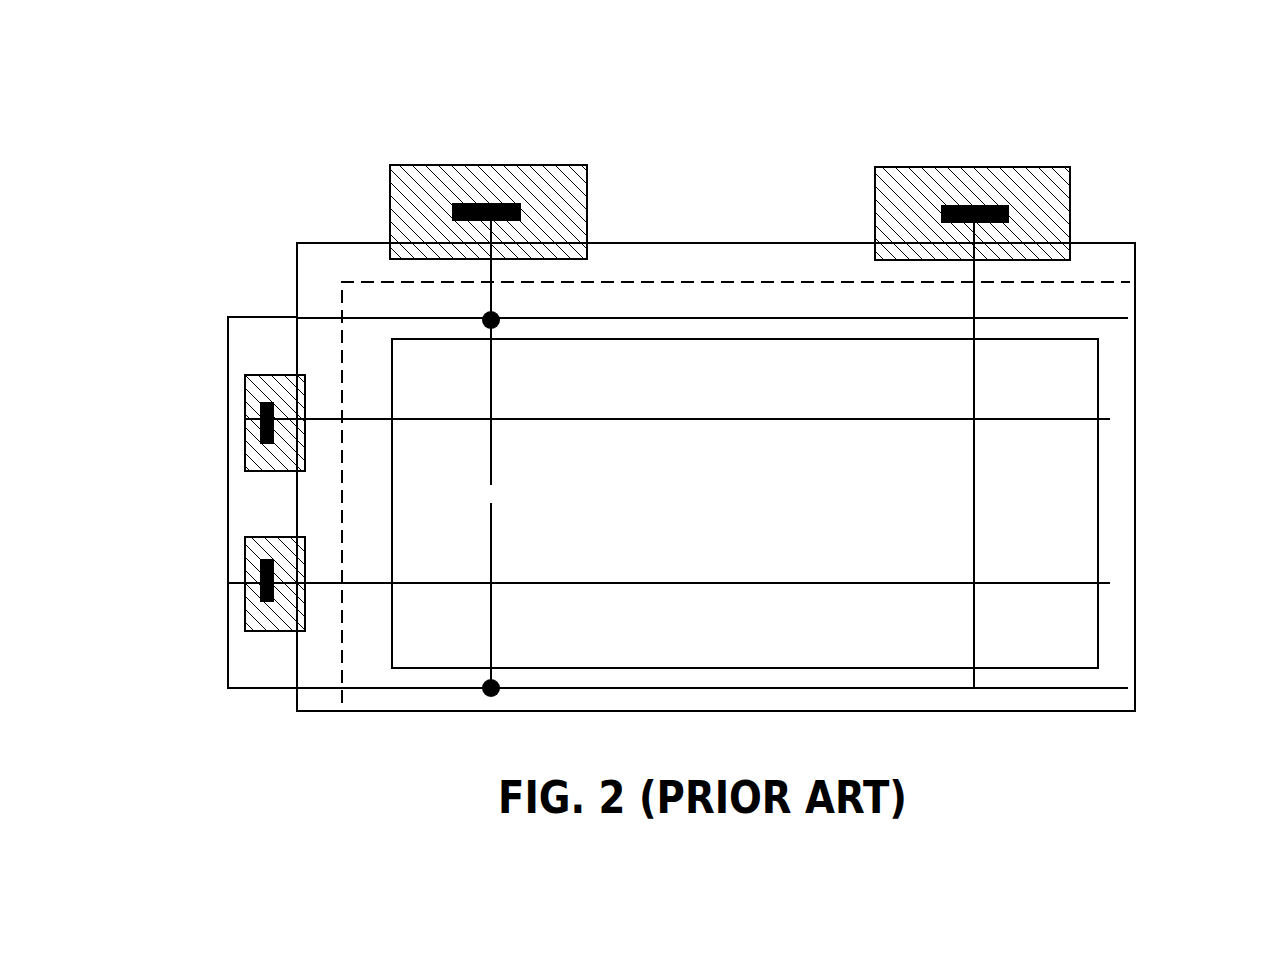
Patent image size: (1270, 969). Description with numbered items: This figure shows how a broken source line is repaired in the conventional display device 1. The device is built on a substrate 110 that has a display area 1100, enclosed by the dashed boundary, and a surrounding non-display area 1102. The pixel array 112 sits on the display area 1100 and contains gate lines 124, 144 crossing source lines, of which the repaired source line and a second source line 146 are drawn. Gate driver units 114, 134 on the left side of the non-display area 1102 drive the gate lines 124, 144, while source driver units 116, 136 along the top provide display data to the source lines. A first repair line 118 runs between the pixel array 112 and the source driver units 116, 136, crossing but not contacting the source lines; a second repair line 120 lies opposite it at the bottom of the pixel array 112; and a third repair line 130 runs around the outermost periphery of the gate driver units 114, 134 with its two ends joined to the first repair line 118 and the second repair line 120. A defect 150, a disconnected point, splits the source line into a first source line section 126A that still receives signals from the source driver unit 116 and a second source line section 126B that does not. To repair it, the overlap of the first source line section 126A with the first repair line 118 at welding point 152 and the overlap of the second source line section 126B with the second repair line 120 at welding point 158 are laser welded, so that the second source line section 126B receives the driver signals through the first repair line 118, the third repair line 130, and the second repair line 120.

The display device 1 is at (1264, 71).
The substrate 110 is at (1113, 243).
The pixel array 112 is at (1098, 382).
The gate driver unit 114 is at (258, 424).
The source driver unit 116 is at (482, 178).
The first repair line 118 is at (645, 320).
The second repair line 120 is at (820, 688).
The gate line 124 is at (727, 420).
The first source line section 126A is at (491, 453).
The second source line section 126B is at (491, 559).
The third repair line 130 is at (228, 333).
The gate driver unit 134 is at (230, 583).
The source driver unit 136 is at (975, 195).
The gate line 144 is at (727, 583).
The source line 146 is at (975, 513).
The defect 150 is at (500, 495).
The welding point 152 is at (495, 316).
The welding point 158 is at (497, 698).
The display area 1100 is at (779, 307).
The non-display area 1102 is at (726, 257).